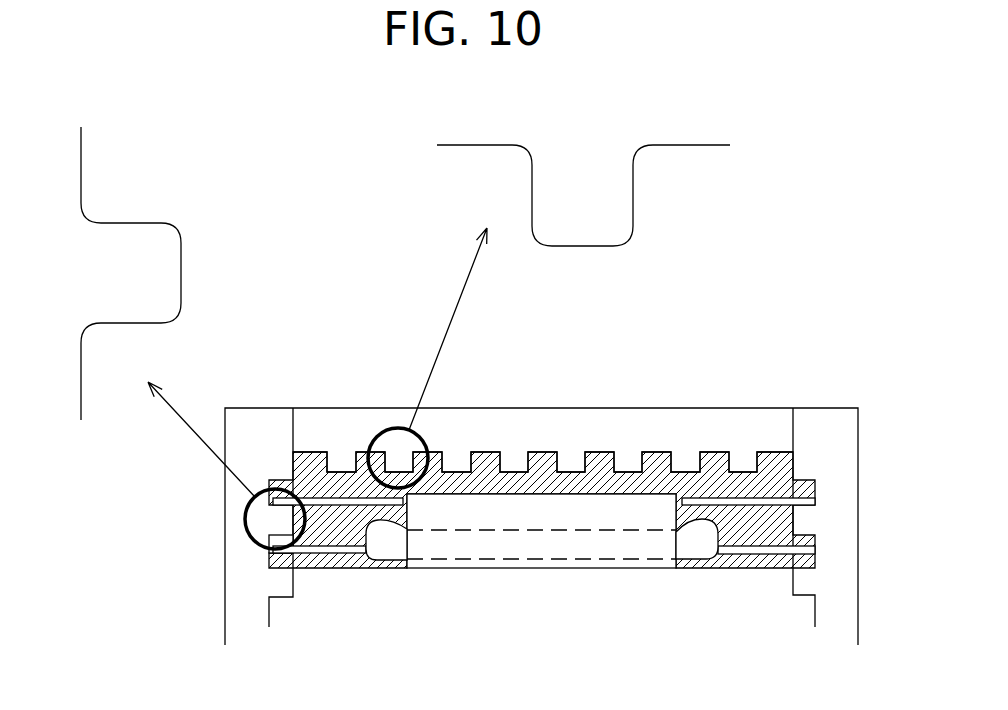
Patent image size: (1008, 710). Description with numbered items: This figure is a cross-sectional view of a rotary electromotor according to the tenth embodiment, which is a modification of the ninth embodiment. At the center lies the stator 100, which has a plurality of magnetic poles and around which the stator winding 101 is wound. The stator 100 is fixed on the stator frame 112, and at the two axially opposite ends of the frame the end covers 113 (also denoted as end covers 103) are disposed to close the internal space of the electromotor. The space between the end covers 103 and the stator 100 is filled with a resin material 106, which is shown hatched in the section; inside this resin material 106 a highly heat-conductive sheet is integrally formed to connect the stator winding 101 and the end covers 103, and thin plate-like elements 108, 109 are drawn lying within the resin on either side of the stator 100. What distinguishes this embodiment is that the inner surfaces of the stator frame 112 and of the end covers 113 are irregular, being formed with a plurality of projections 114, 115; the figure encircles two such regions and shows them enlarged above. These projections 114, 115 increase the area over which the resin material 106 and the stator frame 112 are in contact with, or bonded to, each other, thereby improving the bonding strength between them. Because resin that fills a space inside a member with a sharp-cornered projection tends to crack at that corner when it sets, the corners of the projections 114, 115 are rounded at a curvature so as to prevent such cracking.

The stator 100 is at (541, 531).
The stator winding 101 is at (698, 546).
The end cover 103 is at (832, 423).
The resin material 106 is at (340, 488).
The upper leaf spring 108 is at (710, 500).
The lower leaf spring 109 is at (358, 552).
The stator frame 112 is at (548, 430).
The end cover 113 is at (253, 423).
The projection 114 is at (549, 316).
The projection 115 is at (186, 338).